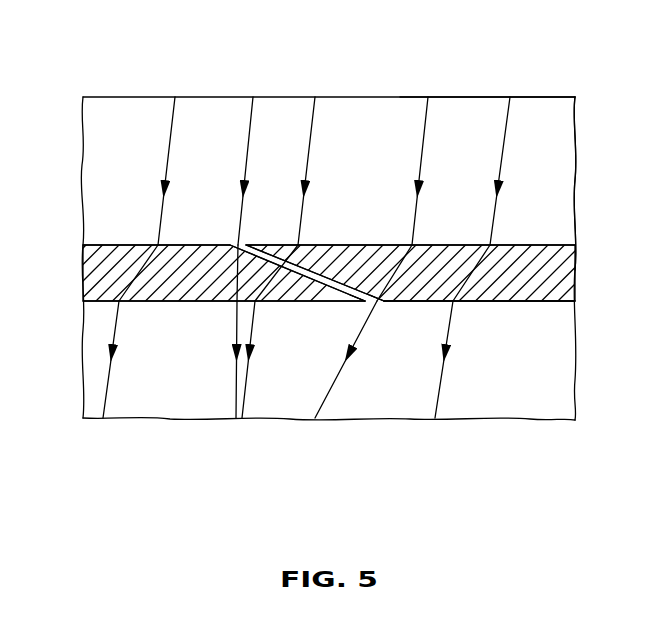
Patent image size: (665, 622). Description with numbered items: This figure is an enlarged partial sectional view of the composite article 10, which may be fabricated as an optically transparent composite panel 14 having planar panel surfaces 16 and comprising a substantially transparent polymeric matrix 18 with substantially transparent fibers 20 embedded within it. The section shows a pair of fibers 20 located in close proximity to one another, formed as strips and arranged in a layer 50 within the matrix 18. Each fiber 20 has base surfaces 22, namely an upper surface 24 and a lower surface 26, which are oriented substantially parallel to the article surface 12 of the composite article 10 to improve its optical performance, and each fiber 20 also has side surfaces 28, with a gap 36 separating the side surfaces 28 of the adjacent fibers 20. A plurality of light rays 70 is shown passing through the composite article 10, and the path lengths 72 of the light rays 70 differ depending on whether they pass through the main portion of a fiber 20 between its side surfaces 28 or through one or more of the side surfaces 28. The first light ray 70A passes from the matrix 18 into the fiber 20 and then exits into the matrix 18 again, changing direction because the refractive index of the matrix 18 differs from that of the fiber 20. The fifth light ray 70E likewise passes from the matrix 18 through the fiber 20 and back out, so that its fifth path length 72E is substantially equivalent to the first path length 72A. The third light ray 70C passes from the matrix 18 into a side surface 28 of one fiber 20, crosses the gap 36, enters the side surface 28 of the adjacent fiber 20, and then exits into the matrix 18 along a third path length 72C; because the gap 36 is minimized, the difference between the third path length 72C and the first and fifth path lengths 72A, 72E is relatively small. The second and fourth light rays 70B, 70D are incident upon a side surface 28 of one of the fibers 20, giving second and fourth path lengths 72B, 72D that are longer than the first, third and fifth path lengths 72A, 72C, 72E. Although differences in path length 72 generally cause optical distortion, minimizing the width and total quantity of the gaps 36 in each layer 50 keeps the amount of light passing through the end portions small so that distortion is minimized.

The composite article 10 is at (95, 97).
The article surface 12 is at (108, 97).
The composite panel 14 is at (565, 97).
The panel surfaces 16 is at (543, 97).
The matrix 18 is at (552, 388).
The fibers 20 is at (552, 272).
The base surfaces 22 is at (110, 272).
The upper surface 24 is at (107, 243).
The lower surface 26 is at (97, 302).
The side surfaces 28 is at (333, 272).
The gap 36 is at (384, 306).
The layer 50 is at (562, 287).
The light rays 70 is at (170, 150).
The first light ray 70A is at (175, 114).
The second light ray 70B is at (255, 114).
The third light ray 70C is at (313, 114).
The fourth light ray 70D is at (427, 114).
The fifth light ray 70E is at (507, 114).
The path lengths 72 is at (110, 372).
The first path length 72A is at (107, 398).
The second path length 72B is at (262, 418).
The third path length 72C is at (262, 418).
The fourth path length 72D is at (333, 388).
The fifth path length 72E is at (442, 378).